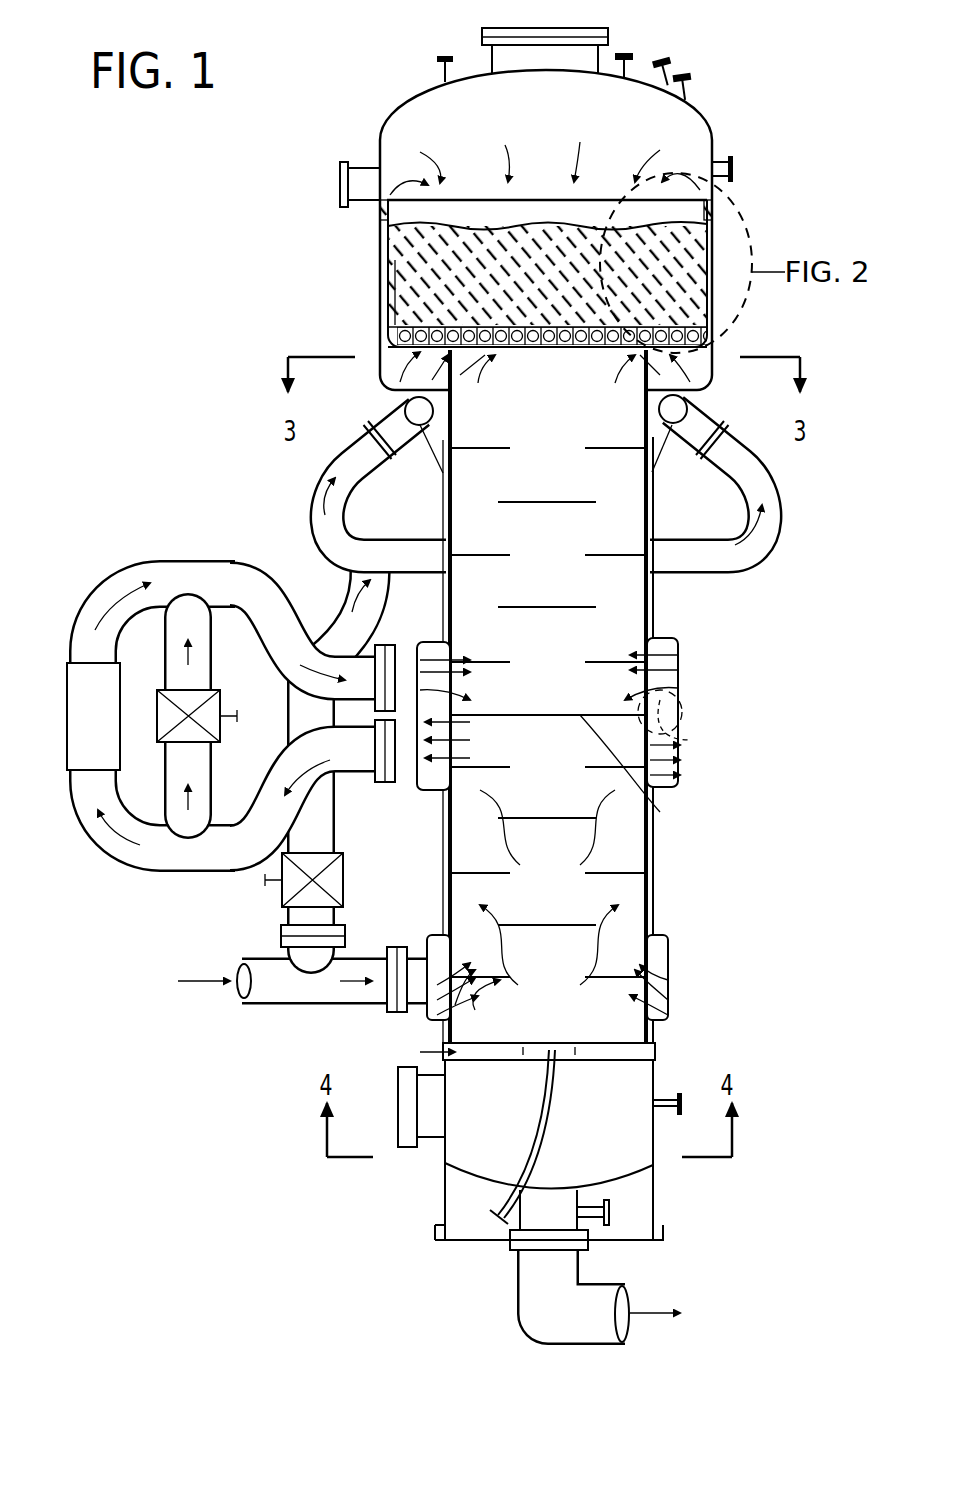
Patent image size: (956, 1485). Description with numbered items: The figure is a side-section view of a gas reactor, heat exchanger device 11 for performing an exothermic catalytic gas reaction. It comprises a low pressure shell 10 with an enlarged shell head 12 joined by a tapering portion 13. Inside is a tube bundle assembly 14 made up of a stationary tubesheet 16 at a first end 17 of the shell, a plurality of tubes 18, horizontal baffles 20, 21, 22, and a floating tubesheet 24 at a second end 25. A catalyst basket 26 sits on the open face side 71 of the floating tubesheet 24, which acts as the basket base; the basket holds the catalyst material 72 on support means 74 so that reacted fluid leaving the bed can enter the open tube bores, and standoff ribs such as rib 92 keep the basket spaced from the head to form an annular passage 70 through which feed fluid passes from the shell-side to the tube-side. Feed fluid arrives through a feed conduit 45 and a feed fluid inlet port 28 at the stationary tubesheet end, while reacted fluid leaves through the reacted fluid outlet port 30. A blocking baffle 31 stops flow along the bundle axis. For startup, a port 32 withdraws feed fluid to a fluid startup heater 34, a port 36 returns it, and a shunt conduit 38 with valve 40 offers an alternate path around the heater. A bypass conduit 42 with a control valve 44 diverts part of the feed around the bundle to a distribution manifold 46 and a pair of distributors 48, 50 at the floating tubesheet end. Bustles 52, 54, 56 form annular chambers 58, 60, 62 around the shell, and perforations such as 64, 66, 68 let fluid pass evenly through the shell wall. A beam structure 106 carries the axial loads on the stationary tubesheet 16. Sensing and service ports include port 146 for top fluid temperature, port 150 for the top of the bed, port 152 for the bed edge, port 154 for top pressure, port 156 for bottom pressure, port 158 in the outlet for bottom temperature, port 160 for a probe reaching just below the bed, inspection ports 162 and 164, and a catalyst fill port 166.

The low pressure shell 10 is at (655, 828).
The gas reactor, heat exchanger device 11 is at (793, 800).
The enlarged shell head 12 is at (715, 290).
The tapering portion 13 is at (428, 470).
The tube bundle assembly 14 is at (658, 625).
The stationary tubesheet 16 is at (640, 1043).
The first end 17 is at (655, 1075).
The tubes 18 is at (655, 598).
The baffle 20 is at (590, 912).
The baffle 21 is at (452, 872).
The baffle 22 is at (655, 868).
The floating tubesheet 24 is at (450, 390).
The second end 25 is at (375, 250).
The catalyst basket 26 is at (712, 322).
The feed fluid inlet port 28 is at (385, 1010).
The reacted fluid outlet port 30 is at (590, 1250).
The blocking baffle 31 is at (660, 812).
The port 32 is at (385, 782).
The fluid startup heater 34 is at (78, 690).
The port 36 is at (380, 645).
The shunt conduit 38 is at (170, 820).
The valve 40 is at (222, 738).
The bypass conduit 42 is at (335, 828).
The control valve 44 is at (345, 893).
The feed conduit 45 is at (270, 1003).
The distribution manifold 46 is at (330, 560).
The distributor 48 is at (420, 426).
The distributor 50 is at (672, 430).
The bustle 52 is at (670, 940).
The bustle 54 is at (678, 735).
The bustle 56 is at (680, 658).
The annular chamber 58 is at (668, 968).
The annular chamber 60 is at (672, 768).
The annular chamber 62 is at (668, 692).
The perforation 64 is at (668, 1012).
The perforation 66 is at (668, 996).
The perforation 68 is at (668, 980).
The annular passage 70 is at (372, 250).
The open face side 71 is at (405, 325).
The catalyst material 72 is at (690, 290).
The catalyst support means 74 is at (395, 336).
The standoff rib 92 is at (708, 200).
The beam structure 106 is at (420, 1052).
The port 146 is at (440, 66).
The port 150 is at (660, 58).
The port 152 is at (690, 72).
The port 154 is at (722, 160).
The port 156 is at (690, 1118).
The port 158 is at (620, 1208).
The port 160 is at (495, 1205).
The inspection port 162 is at (412, 1148).
The inspection port 164 is at (486, 50).
The catalyst fill port 166 is at (358, 163).